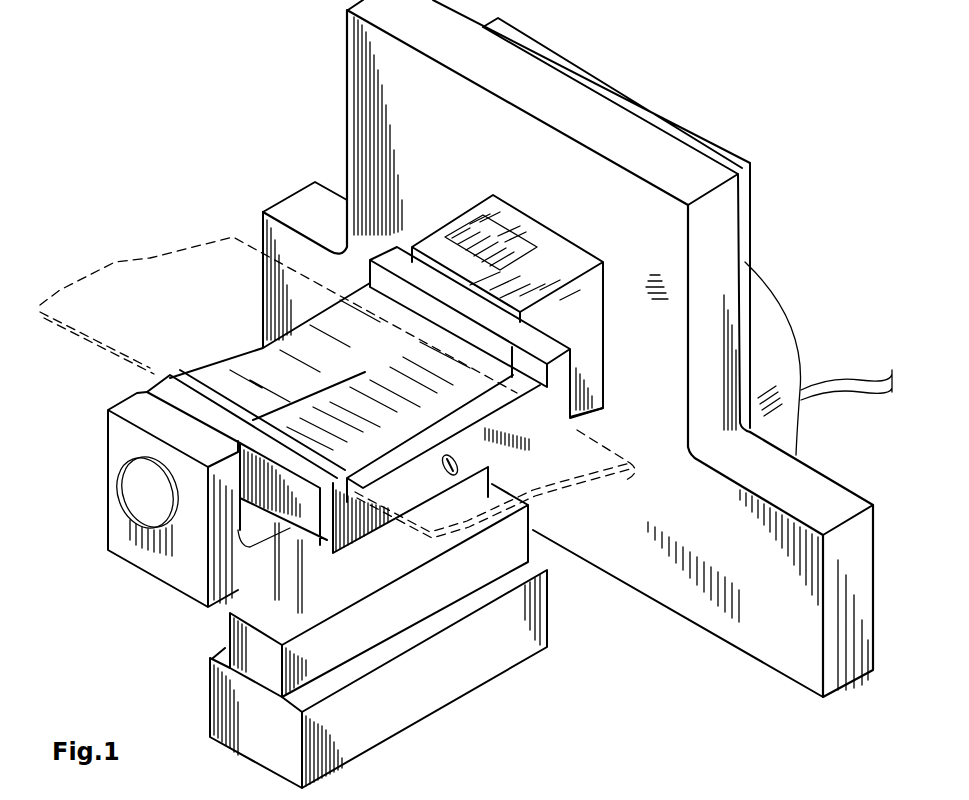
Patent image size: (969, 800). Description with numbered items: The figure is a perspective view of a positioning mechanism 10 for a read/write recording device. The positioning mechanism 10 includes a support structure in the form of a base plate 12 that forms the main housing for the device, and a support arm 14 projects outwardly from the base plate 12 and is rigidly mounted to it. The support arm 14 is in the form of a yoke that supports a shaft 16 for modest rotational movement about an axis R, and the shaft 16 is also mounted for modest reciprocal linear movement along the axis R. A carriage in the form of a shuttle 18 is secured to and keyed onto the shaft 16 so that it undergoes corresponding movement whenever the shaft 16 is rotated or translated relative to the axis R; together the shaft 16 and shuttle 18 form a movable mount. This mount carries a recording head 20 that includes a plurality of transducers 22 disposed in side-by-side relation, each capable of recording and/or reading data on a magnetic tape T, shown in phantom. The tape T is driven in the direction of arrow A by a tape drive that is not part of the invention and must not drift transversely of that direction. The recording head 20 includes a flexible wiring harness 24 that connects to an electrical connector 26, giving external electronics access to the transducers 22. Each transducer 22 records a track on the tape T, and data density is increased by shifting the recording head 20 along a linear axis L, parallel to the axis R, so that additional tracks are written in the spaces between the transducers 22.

The positioning mechanism 10 is at (225, 162).
The base plate 12 is at (747, 625).
The support arm 14 is at (222, 592).
The shaft 16 is at (385, 300).
The shuttle 18 is at (282, 505).
The recording head 20 is at (483, 363).
The transducers 22 is at (297, 433).
The flexible wiring harness 24 is at (285, 575).
The electrical connector 26 is at (407, 693).
The magnetic tape T is at (145, 343).
The arrow indicating tape drive direction A is at (88, 223).
The axis of shaft rotation and translation R is at (143, 493).
The linear axis L is at (133, 548).